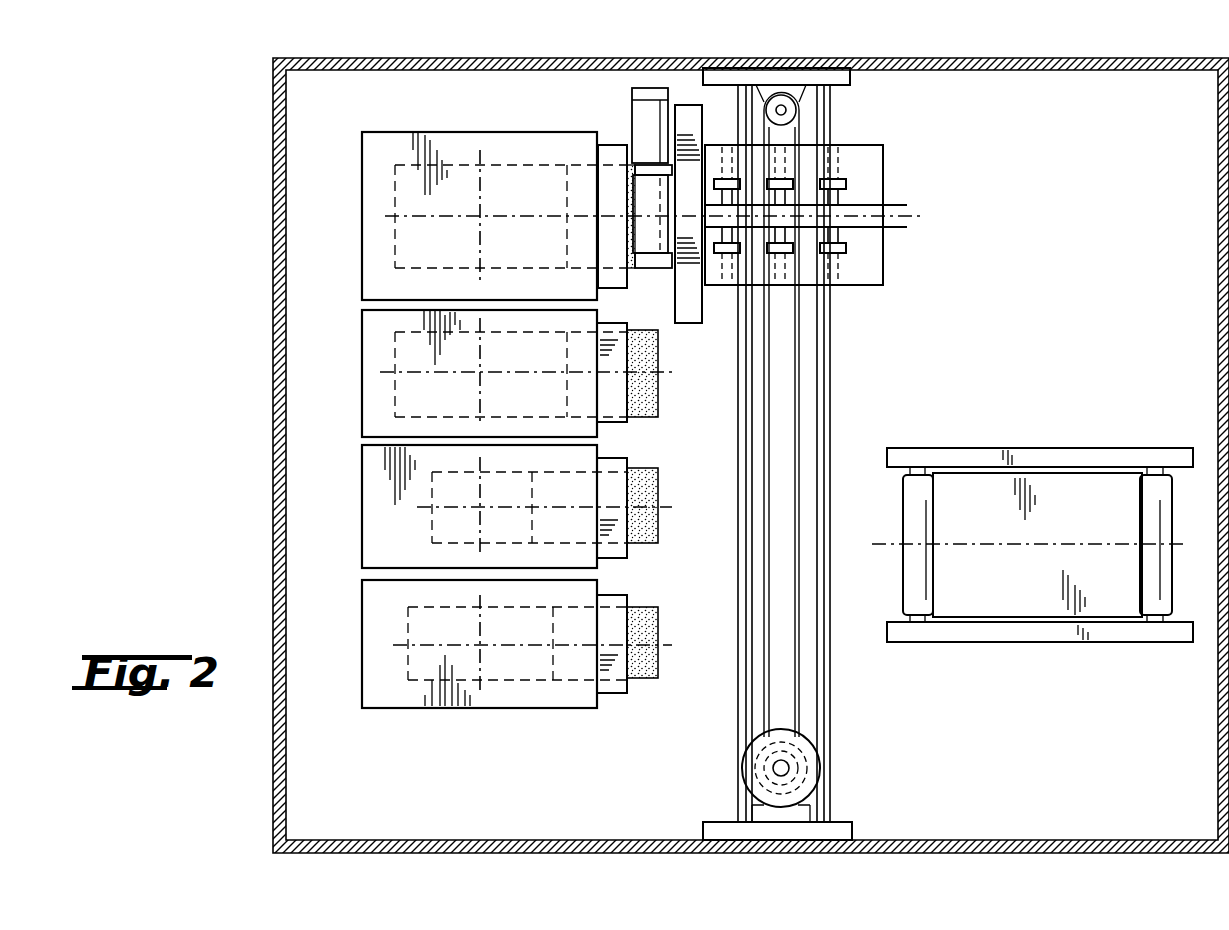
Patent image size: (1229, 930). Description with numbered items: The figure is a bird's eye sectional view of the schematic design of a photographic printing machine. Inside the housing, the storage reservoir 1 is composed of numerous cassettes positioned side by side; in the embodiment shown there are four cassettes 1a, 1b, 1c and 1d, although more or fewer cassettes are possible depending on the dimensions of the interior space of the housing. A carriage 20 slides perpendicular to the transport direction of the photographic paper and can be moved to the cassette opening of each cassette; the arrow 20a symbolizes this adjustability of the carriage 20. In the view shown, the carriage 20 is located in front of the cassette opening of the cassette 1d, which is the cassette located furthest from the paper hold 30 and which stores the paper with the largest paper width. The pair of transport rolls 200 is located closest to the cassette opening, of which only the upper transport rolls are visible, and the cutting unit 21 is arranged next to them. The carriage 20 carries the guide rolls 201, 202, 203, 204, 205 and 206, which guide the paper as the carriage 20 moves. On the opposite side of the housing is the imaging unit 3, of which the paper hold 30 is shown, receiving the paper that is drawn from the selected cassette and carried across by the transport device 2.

The storage reservoir 1 is at (371, 105).
The cassette 1a is at (398, 697).
The cassette 1b is at (372, 542).
The cassette 1c is at (372, 402).
The cassette 1d is at (370, 262).
The transport device 2 is at (887, 97).
The imaging unit 3 is at (1090, 425).
The carriage 20 is at (870, 253).
The arrow 20a is at (913, 170).
The cutting unit 21 is at (687, 118).
The paper hold 30 is at (1040, 606).
The pair of transport rolls 200 is at (632, 197).
The guide roll 201 is at (723, 180).
The guide roll 202 is at (775, 181).
The guide roll 203 is at (838, 182).
The guide roll 204 is at (730, 252).
The guide roll 205 is at (778, 252).
The guide roll 206 is at (833, 252).